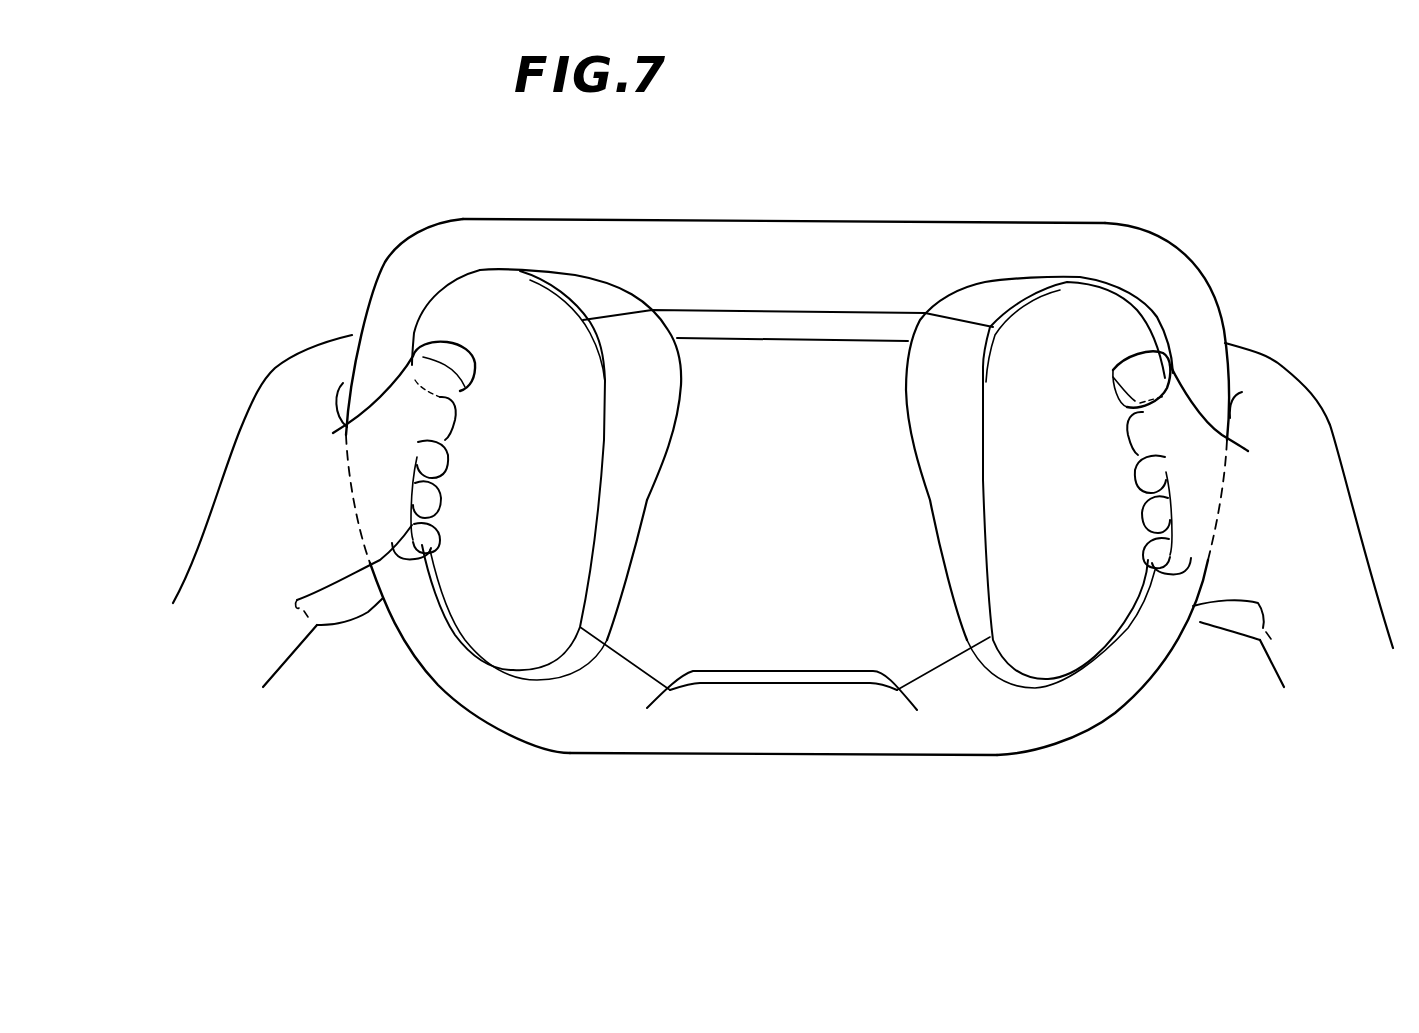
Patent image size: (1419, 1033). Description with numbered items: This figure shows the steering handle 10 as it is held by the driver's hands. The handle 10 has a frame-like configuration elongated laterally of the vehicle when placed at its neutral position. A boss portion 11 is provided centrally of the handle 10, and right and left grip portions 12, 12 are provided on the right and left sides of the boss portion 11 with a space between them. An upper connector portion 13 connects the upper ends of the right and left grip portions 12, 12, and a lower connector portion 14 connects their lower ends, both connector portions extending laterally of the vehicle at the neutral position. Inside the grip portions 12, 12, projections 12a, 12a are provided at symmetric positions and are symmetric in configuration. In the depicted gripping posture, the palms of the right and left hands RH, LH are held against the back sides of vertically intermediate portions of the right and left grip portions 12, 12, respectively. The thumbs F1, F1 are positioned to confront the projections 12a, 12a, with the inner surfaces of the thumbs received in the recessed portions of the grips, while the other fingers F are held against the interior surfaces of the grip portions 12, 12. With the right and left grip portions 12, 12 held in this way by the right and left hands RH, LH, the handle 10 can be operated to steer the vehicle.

The handle 10 is at (887, 203).
The boss portion 11 is at (825, 400).
The grip portion 12 is at (403, 600).
The projection 12a is at (440, 393).
The upper connector portion 13 is at (680, 237).
The lower connector portion 14 is at (781, 757).
The fingers F is at (433, 463).
The thumb F1 is at (457, 353).
The left hand LH is at (273, 453).
The right hand RH is at (1310, 462).